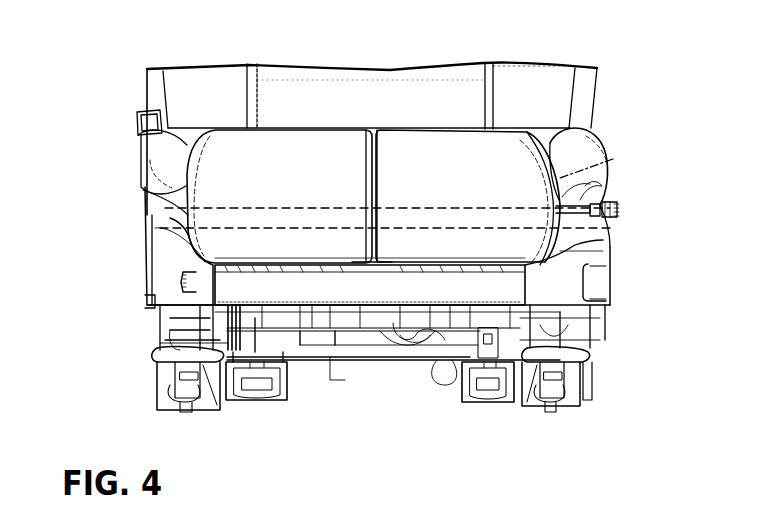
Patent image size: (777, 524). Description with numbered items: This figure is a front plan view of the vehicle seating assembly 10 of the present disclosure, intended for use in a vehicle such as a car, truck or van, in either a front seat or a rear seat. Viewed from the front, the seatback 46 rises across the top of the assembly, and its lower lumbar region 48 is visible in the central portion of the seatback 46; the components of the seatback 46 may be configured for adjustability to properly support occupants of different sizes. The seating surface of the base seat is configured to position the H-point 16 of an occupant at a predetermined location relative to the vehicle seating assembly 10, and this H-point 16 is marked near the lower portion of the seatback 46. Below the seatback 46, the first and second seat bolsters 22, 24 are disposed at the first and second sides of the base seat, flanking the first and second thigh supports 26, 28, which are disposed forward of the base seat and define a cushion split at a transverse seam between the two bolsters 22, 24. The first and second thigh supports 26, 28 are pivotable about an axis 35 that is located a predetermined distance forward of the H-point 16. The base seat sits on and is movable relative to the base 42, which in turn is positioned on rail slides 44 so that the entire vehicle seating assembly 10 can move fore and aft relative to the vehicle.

The vehicle seating assembly 10 is at (637, 92).
The H-point 16 is at (367, 107).
The first seat bolster 22 is at (155, 165).
The second seat bolster 24 is at (580, 147).
The first thigh support 26 is at (288, 190).
The second thigh support 28 is at (458, 190).
The axis 35 is at (613, 159).
The base 42 is at (593, 255).
The rail slides 44 is at (170, 382).
The seatback 46 is at (537, 93).
The lower lumbar region 48 is at (442, 110).